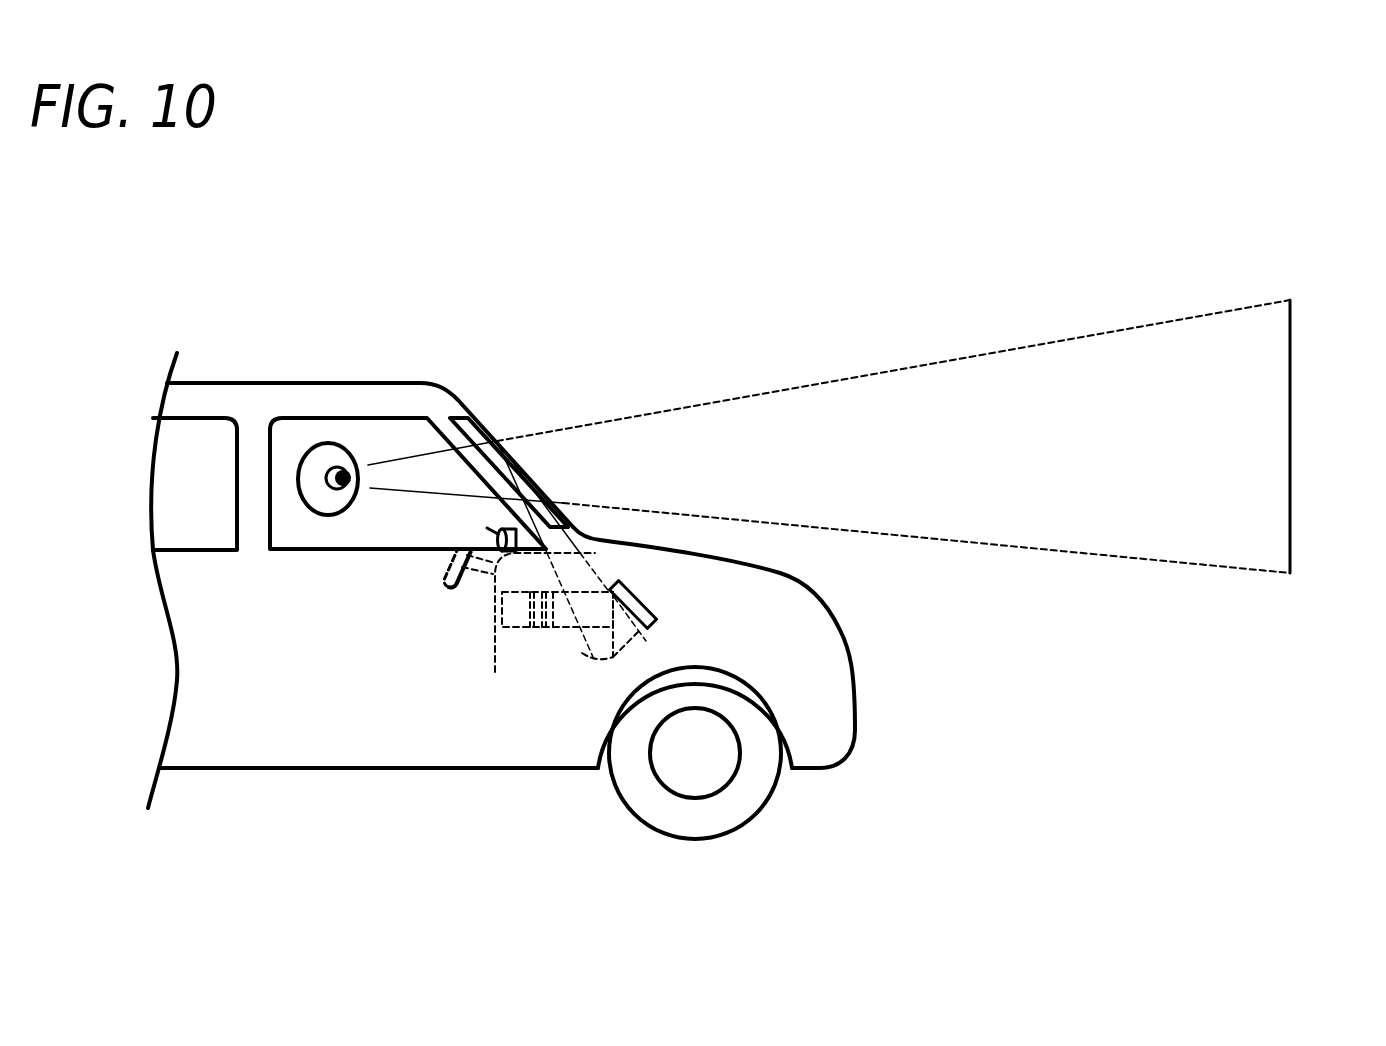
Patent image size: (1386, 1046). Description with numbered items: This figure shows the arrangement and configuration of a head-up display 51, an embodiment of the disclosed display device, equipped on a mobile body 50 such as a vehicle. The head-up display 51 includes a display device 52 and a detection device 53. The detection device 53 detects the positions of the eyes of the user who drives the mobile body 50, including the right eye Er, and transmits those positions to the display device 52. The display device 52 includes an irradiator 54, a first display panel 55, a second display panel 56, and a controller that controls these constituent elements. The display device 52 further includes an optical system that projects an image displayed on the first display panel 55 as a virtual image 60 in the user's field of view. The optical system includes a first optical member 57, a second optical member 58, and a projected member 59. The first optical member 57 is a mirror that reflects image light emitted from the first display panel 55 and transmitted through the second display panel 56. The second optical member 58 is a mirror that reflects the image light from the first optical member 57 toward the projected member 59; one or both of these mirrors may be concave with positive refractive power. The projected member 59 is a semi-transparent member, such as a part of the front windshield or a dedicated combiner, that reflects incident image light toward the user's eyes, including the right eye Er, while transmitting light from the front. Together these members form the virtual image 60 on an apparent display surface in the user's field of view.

The mobile body 50 is at (307, 403).
The head-up display 51 is at (472, 658).
The display device 52 is at (547, 675).
The detection device 53 is at (475, 518).
The irradiator 54 is at (513, 618).
The first display panel 55 is at (537, 628).
The second display panel 56 is at (548, 628).
The first optical member 57 is at (646, 596).
The second optical member 58 is at (638, 645).
The projected member 59 is at (481, 437).
The virtual image 60 is at (1290, 408).
The right eye Er is at (343, 475).